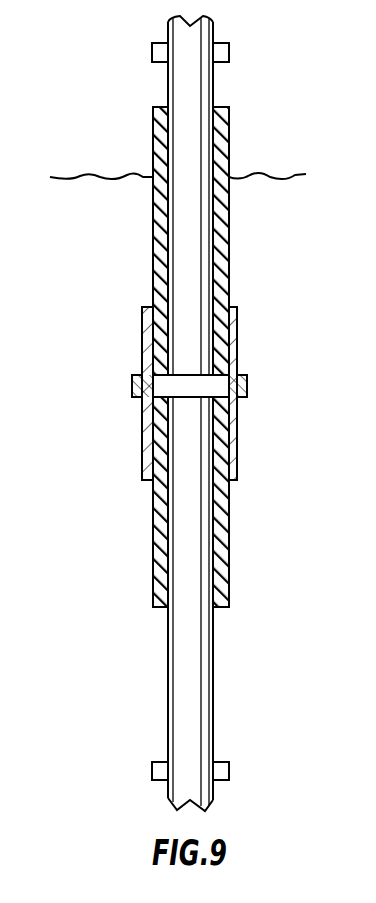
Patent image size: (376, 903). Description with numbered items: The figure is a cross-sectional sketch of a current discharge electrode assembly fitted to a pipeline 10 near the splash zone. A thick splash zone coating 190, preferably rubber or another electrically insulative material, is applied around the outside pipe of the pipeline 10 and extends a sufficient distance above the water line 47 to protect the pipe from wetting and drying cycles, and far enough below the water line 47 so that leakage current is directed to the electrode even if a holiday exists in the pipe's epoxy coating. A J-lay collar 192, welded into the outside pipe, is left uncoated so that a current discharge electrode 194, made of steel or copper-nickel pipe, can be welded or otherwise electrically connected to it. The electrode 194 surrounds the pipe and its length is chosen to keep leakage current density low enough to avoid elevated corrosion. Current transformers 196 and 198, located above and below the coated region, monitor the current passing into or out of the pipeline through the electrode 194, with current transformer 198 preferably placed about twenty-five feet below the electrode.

The pipeline 10 is at (213, 83).
The water line 47 is at (69, 175).
The thick splash zone coating 190 is at (229, 496).
The J-lay collar 192 is at (132, 388).
The current discharge electrode 194 is at (142, 336).
The current transformer 196 is at (157, 52).
The current transformer 198 is at (222, 770).